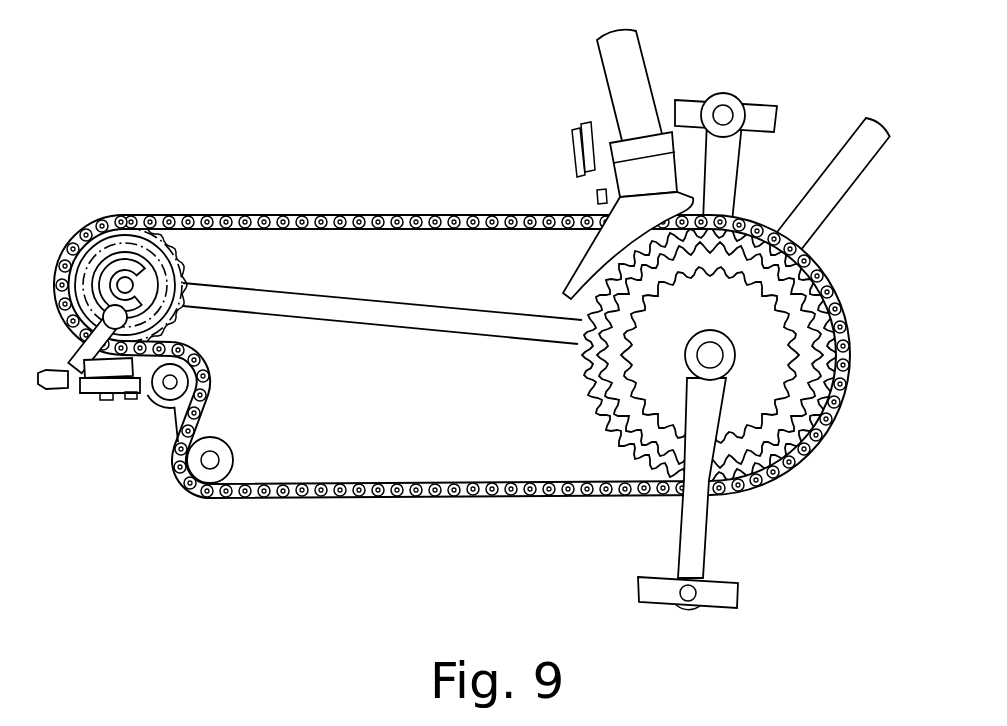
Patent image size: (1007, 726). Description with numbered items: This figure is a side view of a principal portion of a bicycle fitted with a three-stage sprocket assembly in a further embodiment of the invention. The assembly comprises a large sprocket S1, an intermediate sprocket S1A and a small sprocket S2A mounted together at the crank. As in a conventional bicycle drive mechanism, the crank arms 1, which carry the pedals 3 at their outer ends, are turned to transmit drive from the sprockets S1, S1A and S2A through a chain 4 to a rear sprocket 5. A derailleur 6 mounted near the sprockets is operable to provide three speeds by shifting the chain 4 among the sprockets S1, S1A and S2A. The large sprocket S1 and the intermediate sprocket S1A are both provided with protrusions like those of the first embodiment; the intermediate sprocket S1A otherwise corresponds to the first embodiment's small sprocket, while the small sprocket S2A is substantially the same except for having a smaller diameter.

The crank arms 1 is at (703, 308).
The pedal 3 is at (697, 96).
The chain 4 is at (337, 217).
The rear sprocket 5 is at (200, 237).
The derailleur 6 is at (580, 250).
The large sprocket S1 is at (578, 361).
The intermediate sprocket S1A is at (588, 402).
The small sprocket S2A is at (613, 440).